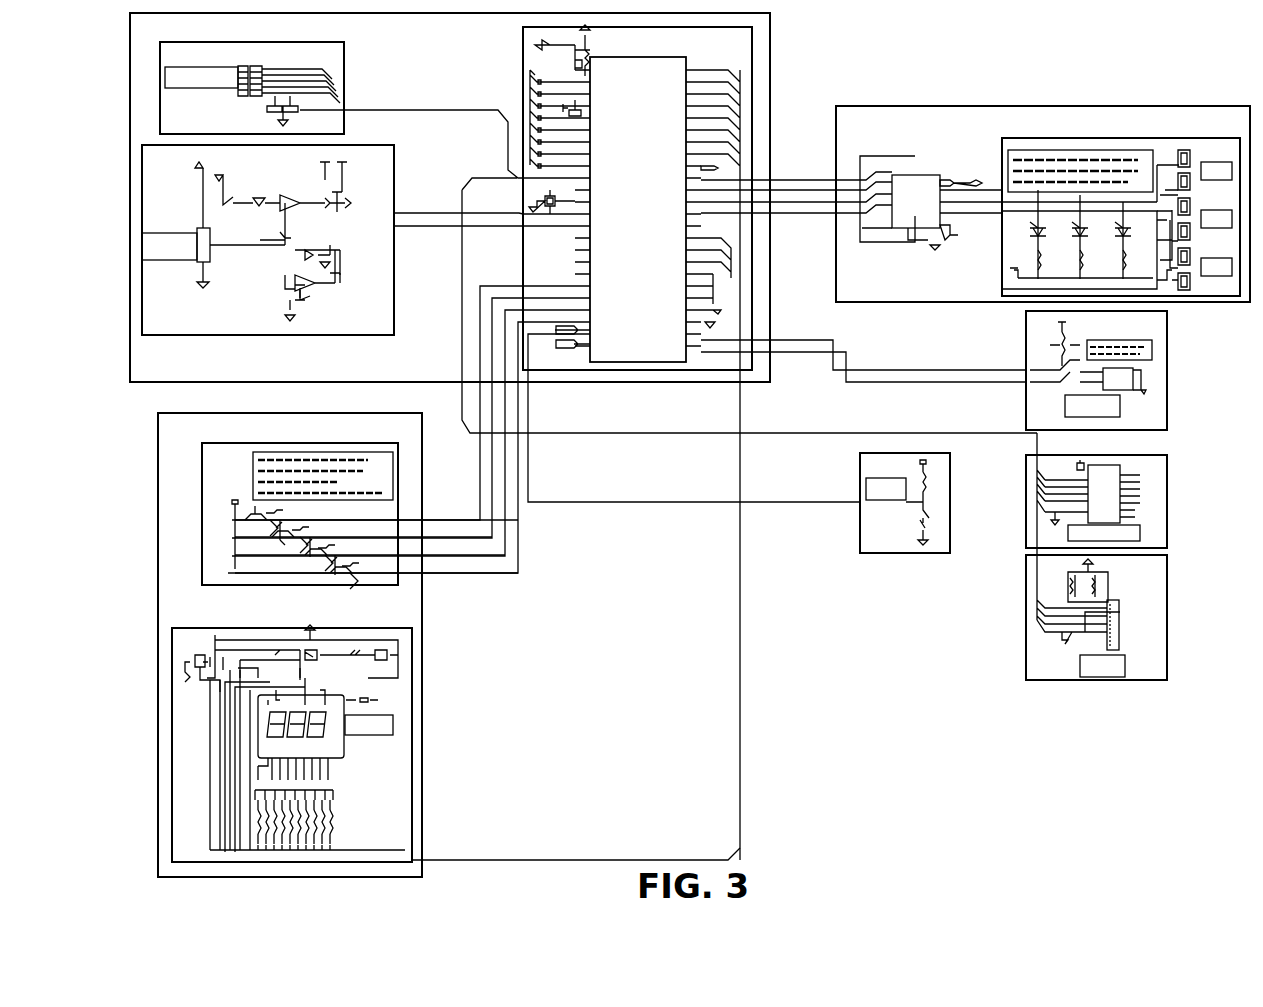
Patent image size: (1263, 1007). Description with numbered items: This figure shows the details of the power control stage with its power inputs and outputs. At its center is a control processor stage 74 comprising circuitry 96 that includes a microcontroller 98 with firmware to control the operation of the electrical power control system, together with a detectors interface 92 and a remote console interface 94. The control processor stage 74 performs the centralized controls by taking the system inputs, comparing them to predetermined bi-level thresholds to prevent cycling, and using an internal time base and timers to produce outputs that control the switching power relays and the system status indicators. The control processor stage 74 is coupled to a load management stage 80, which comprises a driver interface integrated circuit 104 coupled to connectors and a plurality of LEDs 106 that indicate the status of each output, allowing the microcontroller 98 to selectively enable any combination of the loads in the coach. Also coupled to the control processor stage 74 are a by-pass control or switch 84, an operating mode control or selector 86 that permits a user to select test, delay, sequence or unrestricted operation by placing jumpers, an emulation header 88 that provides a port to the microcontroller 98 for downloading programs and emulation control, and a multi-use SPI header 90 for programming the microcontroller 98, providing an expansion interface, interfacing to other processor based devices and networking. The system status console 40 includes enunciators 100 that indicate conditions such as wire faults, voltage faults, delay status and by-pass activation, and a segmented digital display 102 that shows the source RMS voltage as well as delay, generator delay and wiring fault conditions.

The system status console 40 is at (347, 413).
The control processor stage 74 is at (772, 56).
The load management stage 80 is at (1017, 107).
The by-pass control or switch 84 is at (952, 488).
The operating mode control or selector 86 is at (1168, 378).
The emulation header 88 is at (1168, 507).
The multi-use serial peripheral interface (SPI) header 90 is at (1167, 610).
The detectors interface 92 is at (360, 63).
The remote console interface 94 is at (397, 195).
The circuitry 96 is at (615, 442).
The microcontroller 98 is at (670, 53).
The enunciators 100 is at (342, 443).
The segmented digital display 102 is at (340, 628).
The driver interface integrated circuit 104 is at (928, 172).
The plurality of LEDs 106 is at (1097, 137).